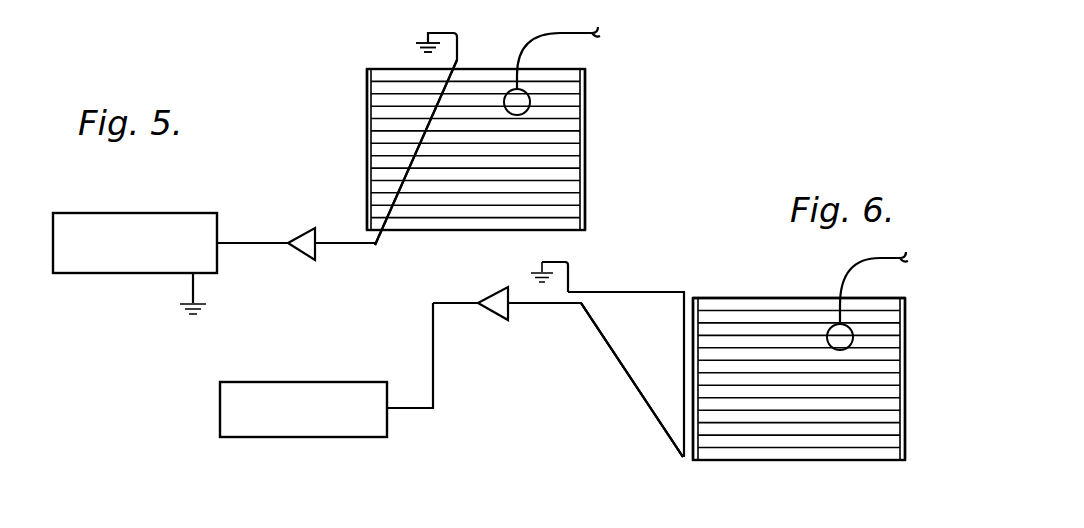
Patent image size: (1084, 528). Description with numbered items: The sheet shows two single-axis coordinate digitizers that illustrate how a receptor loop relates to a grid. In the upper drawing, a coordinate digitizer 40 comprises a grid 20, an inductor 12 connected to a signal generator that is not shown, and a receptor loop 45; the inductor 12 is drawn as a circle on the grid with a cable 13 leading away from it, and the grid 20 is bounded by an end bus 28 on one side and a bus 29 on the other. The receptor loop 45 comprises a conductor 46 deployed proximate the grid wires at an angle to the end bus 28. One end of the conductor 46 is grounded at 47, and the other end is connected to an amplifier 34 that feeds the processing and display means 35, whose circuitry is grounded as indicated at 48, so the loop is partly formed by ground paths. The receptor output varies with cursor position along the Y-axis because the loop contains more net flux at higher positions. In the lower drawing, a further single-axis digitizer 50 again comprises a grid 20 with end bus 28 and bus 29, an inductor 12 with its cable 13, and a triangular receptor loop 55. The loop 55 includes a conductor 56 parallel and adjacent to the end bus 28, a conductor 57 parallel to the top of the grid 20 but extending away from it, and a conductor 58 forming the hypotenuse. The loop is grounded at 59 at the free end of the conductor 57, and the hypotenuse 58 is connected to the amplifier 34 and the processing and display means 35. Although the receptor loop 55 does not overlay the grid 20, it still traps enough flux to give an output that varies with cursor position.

In FIG. 5, the inductor 12 is at (530, 103).
In FIG. 6, the inductor 12 is at (853, 340).
In FIG. 5, the lamp supply cable 13 is at (577, 34).
In FIG. 6, the lamp supply cable 13 is at (884, 262).
In FIG. 5, the grid 20 is at (436, 242).
In FIG. 6, the grid 20 is at (784, 464).
In FIG. 5, the end bus 28 is at (367, 128).
In FIG. 6, the end bus 28 is at (693, 340).
In FIG. 5, the right edge electrode 29 is at (585, 172).
In FIG. 6, the right edge electrode 29 is at (905, 410).
In FIG. 5, the amplifier 34 is at (307, 262).
In FIG. 6, the amplifier 34 is at (497, 318).
In FIG. 5, the processing and display means 35 is at (145, 273).
In FIG. 6, the processing and display means 35 is at (265, 437).
In FIG. 5, the coordinate digitizer 40 is at (387, 57).
In FIG. 5, the receptor loop 45 is at (453, 27).
In FIG. 5, the conductor 46 is at (415, 158).
In FIG. 5, the ground 47 is at (412, 48).
In FIG. 5, the ground 48 is at (212, 312).
In FIG. 6, the single-axis digitizer 50 is at (770, 280).
In FIG. 6, the receptor loop 55 is at (590, 336).
In FIG. 6, the conductor 56 is at (683, 388).
In FIG. 6, the conductor 57 is at (640, 291).
In FIG. 6, the conductor (hypotenuse) 58 is at (622, 368).
In FIG. 6, the ground 59 is at (532, 277).